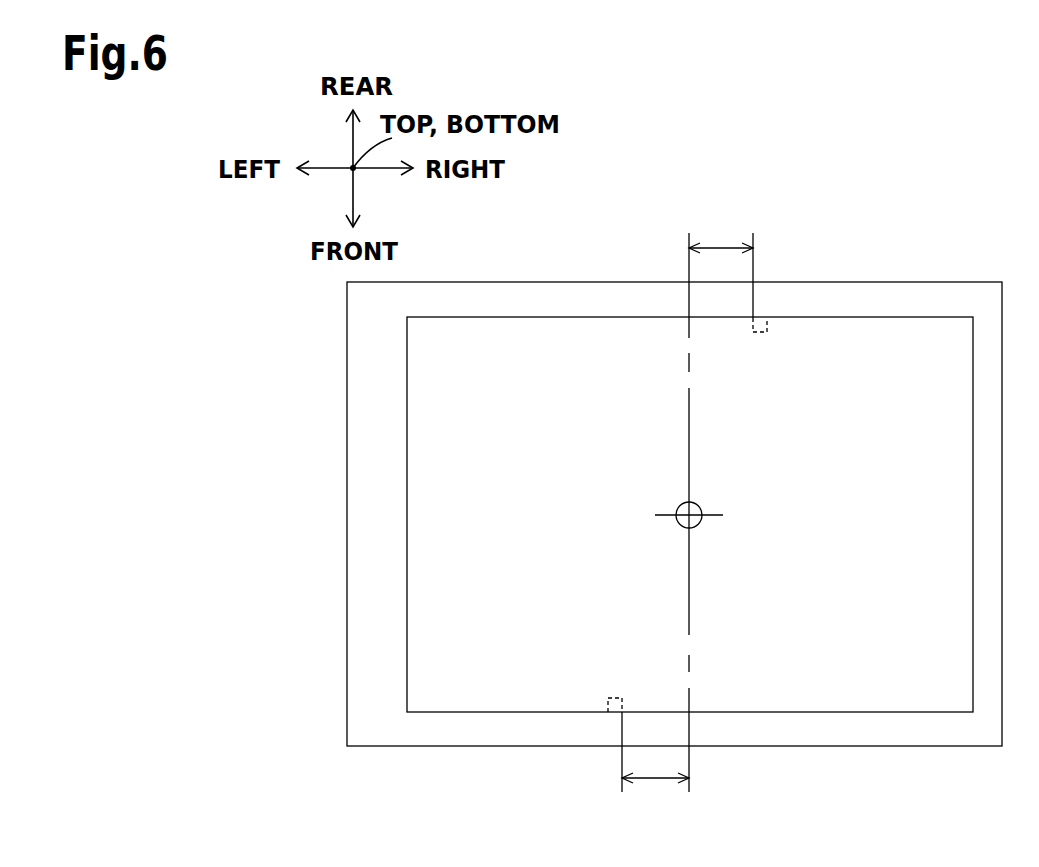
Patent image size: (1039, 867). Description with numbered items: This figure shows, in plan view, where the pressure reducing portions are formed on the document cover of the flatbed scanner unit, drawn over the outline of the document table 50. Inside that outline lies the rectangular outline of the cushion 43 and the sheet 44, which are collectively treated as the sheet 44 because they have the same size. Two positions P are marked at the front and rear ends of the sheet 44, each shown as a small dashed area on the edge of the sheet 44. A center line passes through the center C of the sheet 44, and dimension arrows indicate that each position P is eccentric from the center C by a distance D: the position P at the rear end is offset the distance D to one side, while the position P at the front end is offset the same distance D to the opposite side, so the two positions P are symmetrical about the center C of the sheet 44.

The document table 50 is at (493, 273).
The cushion 43 is at (690, 464).
The sheet 44 is at (922, 332).
The center of the sheet C is at (692, 512).
The distance D is at (687, 516).
The position P is at (769, 328).